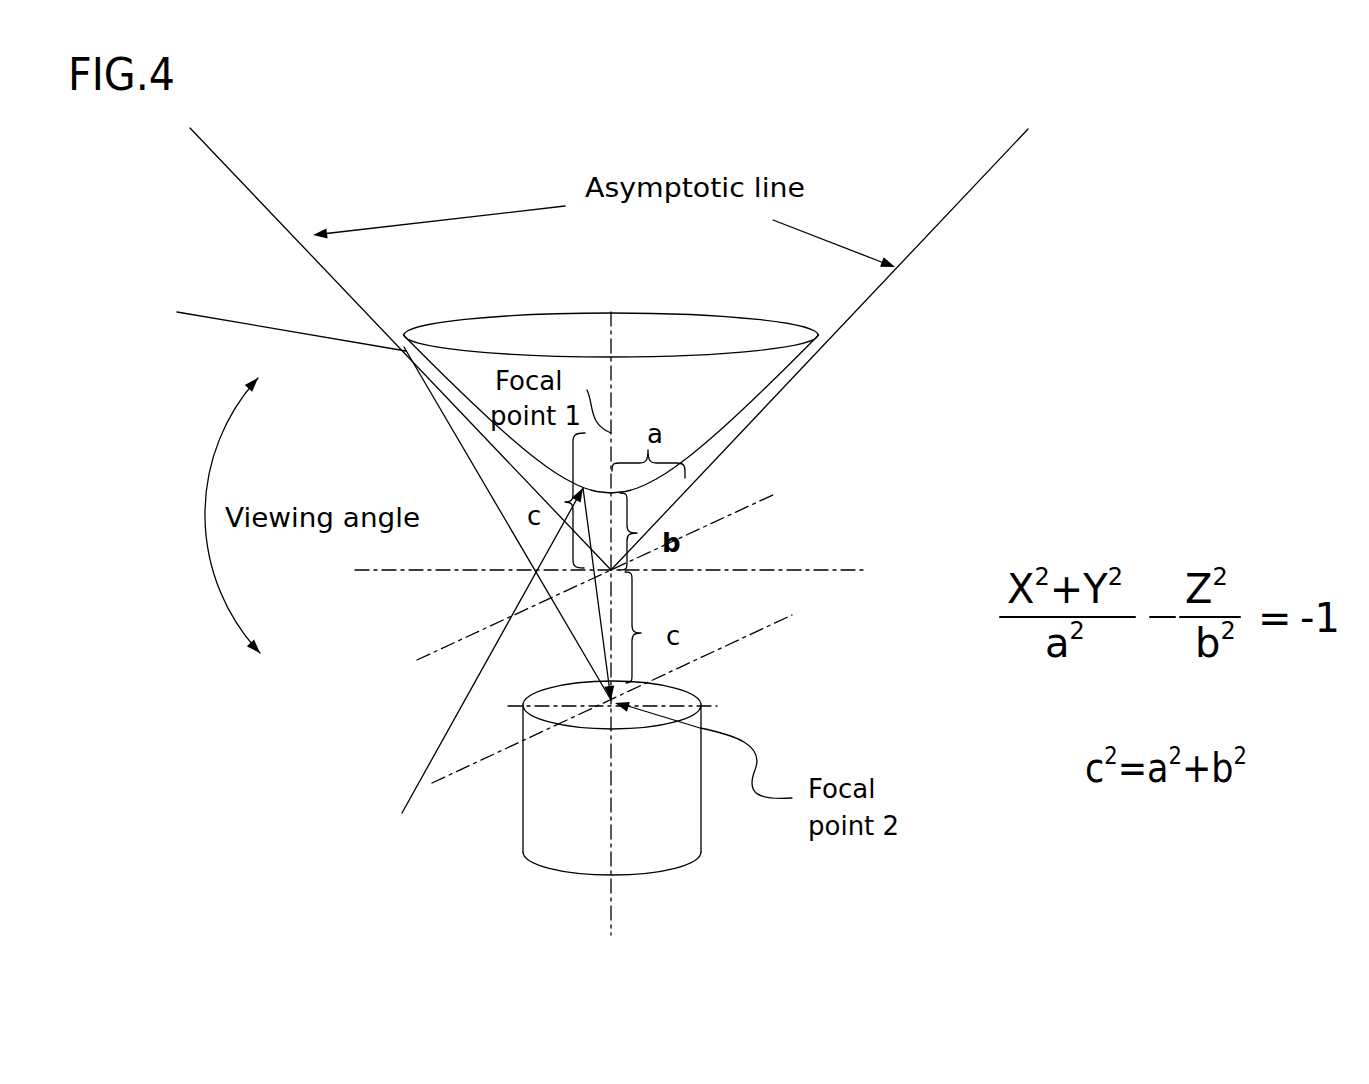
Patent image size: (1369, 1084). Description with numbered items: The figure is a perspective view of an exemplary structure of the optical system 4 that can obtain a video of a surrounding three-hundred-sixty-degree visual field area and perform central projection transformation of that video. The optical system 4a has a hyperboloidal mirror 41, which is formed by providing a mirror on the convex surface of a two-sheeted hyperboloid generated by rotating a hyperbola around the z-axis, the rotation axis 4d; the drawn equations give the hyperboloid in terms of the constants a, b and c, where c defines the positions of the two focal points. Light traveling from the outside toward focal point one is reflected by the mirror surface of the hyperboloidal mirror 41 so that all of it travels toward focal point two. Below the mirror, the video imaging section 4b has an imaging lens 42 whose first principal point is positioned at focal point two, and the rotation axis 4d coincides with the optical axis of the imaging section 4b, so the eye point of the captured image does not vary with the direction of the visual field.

The optical system 4 is at (741, 379).
The rotation axis 4d is at (611, 311).
The hyperboloidal mirror 41 is at (780, 395).
The optical system 4a is at (675, 414).
The imaging lens 42 is at (550, 685).
The video imaging section 4b is at (527, 775).